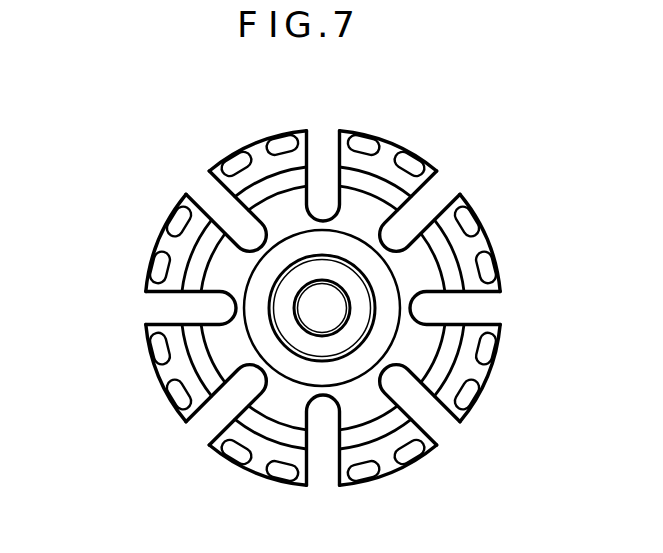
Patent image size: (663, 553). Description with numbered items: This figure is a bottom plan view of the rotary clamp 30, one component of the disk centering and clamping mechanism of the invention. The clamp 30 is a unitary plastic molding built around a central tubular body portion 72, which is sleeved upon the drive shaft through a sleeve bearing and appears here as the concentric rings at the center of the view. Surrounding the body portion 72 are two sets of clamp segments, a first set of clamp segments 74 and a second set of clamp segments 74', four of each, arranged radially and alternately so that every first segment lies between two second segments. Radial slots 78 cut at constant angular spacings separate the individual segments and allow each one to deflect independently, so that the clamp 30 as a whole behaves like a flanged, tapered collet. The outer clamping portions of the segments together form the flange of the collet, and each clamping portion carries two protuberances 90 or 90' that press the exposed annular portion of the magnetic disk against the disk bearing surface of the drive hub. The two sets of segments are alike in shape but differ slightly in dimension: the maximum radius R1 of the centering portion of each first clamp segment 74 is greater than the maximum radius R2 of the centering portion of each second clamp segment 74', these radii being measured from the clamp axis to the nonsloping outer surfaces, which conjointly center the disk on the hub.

The rotary clamp 30 is at (323, 312).
The central tubular body portion 72 is at (396, 336).
The first set of clamp segments 74 is at (333, 315).
The second set of clamp segments 74' is at (320, 322).
The slots 78 is at (438, 446).
The protuberances 90 is at (322, 289).
The protuberances 90' is at (386, 140).
The maximum radius of the centering portion of the first clamp segment R1 is at (322, 308).
The maximum radius of the centering portion of the second clamp segment R2 is at (322, 308).